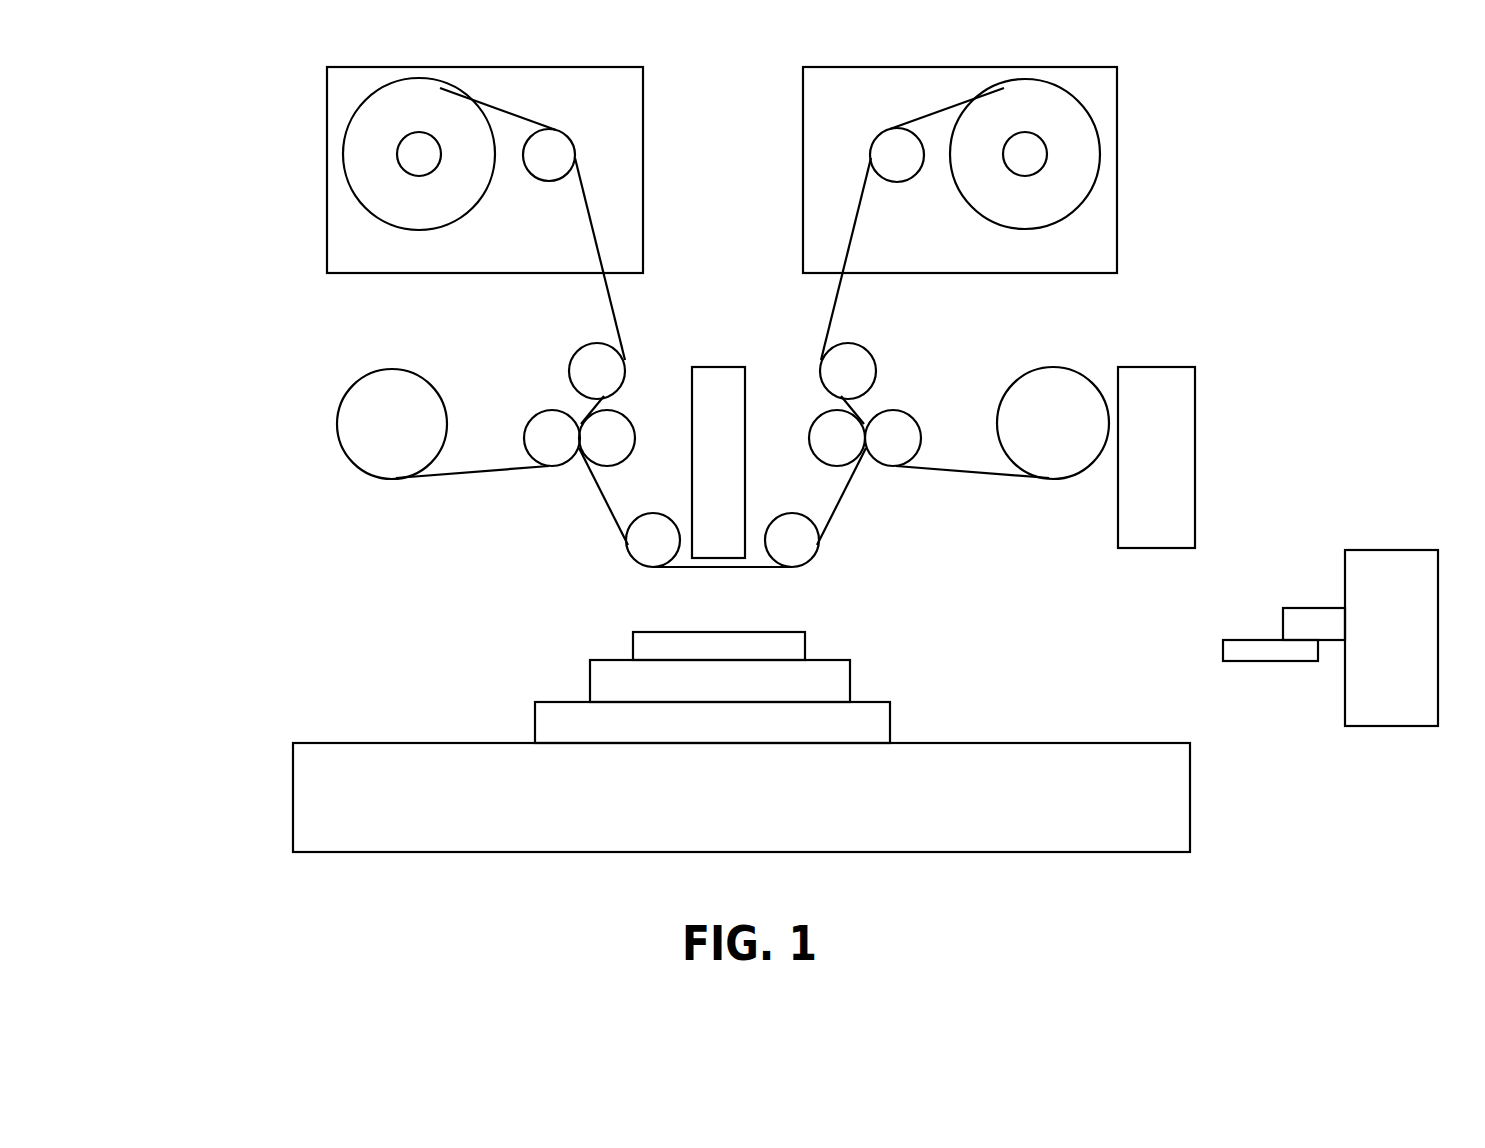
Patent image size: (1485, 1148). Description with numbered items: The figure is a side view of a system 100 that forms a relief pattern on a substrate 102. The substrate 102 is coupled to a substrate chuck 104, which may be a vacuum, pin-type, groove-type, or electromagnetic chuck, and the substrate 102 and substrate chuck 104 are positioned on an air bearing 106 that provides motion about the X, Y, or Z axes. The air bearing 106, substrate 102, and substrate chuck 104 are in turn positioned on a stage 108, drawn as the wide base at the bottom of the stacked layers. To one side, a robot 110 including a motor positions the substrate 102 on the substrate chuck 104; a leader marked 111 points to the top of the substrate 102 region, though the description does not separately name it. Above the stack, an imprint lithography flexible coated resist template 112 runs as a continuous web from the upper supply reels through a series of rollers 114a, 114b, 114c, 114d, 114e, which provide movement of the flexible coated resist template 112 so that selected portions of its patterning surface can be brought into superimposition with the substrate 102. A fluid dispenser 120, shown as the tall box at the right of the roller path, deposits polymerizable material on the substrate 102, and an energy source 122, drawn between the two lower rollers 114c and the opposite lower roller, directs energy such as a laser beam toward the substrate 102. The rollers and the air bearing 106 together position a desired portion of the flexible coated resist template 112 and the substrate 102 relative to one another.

The system 100 is at (221, 102).
The substrate 102 is at (633, 645).
The substrate chuck 104 is at (590, 685).
The air bearing 106 is at (535, 722).
The stage 108 is at (293, 789).
The robot 110 is at (1381, 550).
The top surface of substrate 111 is at (650, 632).
The flexible coated resist template 112 is at (768, 570).
The roller 114a is at (336, 426).
The roller 114b is at (572, 362).
The roller 114c is at (645, 513).
The roller 114d is at (912, 415).
The roller 114e is at (1075, 372).
The fluid dispenser 120 is at (1178, 471).
The energy source 122 is at (711, 367).